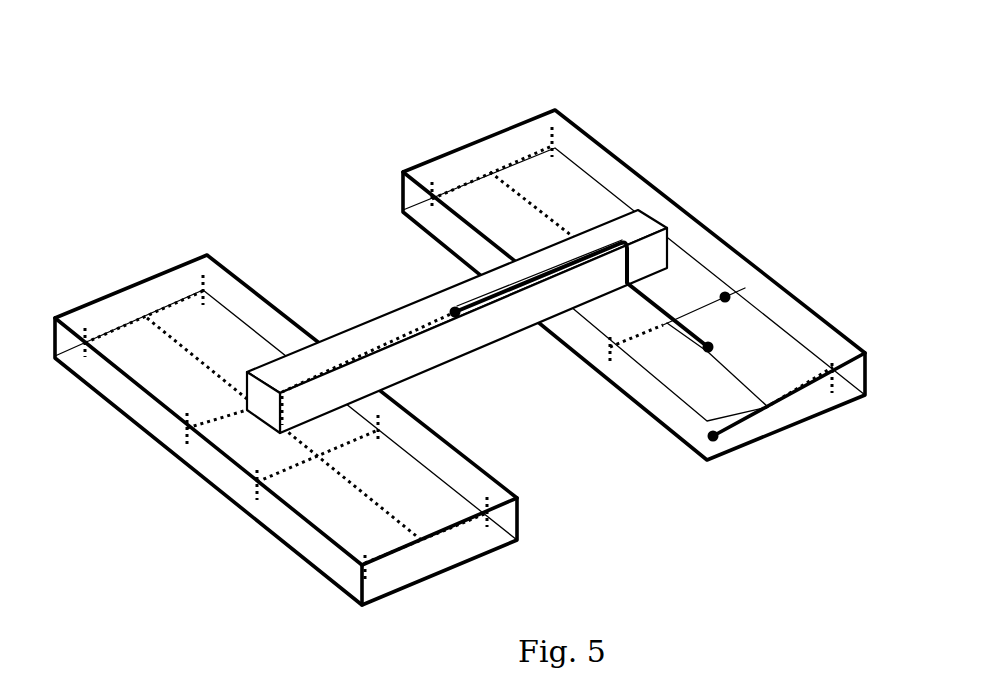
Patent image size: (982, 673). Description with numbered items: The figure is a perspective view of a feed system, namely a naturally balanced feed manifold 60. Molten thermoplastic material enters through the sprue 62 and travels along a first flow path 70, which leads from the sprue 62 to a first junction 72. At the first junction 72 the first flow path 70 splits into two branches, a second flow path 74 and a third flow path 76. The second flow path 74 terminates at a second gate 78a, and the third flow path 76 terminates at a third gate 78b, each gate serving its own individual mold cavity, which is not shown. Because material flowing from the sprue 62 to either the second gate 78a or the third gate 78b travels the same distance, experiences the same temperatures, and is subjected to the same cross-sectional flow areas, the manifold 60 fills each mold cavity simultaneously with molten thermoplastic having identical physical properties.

The naturally balanced feed manifold 60 is at (445, 80).
The sprue 62 is at (452, 309).
The first flow path 70 is at (605, 241).
The first junction 72 is at (702, 353).
The second flow path 74 is at (754, 389).
The third flow path 76 is at (726, 292).
The second gate 78a is at (717, 442).
The third gate 78b is at (714, 344).